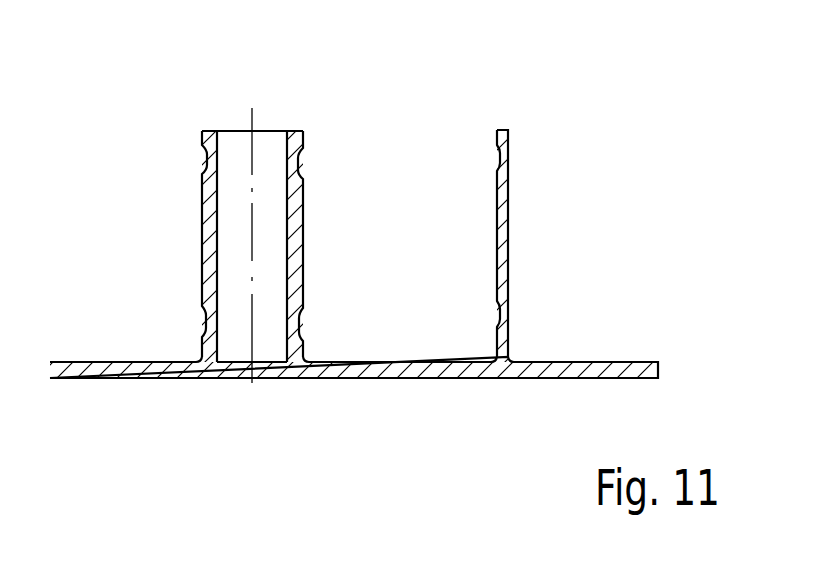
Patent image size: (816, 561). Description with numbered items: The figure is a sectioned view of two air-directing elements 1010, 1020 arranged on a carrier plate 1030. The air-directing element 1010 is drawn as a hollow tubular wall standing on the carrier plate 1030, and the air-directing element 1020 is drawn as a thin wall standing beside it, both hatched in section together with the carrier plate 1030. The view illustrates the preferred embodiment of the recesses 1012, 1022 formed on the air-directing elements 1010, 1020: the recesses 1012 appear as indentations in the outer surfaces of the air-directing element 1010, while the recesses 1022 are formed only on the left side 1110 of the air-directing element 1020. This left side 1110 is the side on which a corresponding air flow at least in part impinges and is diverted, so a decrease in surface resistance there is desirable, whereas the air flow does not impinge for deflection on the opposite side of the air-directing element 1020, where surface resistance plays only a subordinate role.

The air-directing element 1010 is at (176, 215).
The recesses 1012 is at (202, 242).
The air-directing element 1020 is at (505, 214).
The recesses 1022 is at (430, 246).
The left side 1110 is at (474, 177).
The carrier plate 1030 is at (137, 386).